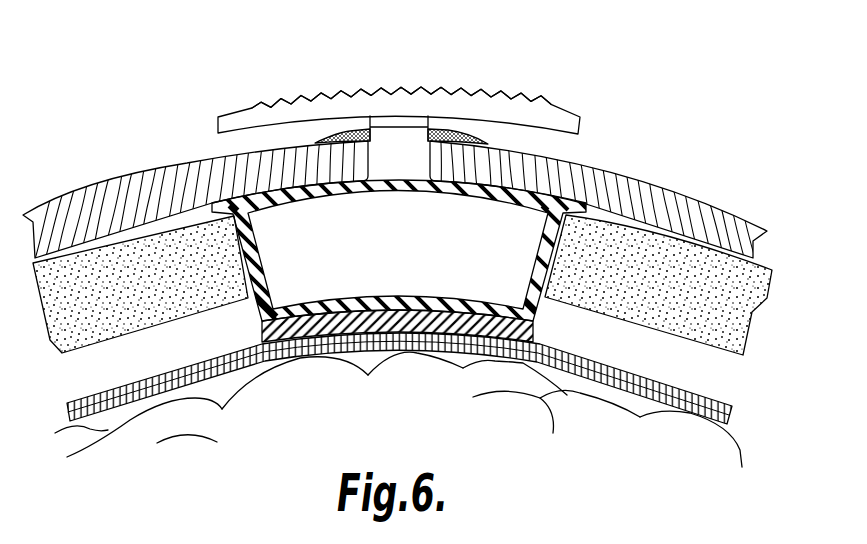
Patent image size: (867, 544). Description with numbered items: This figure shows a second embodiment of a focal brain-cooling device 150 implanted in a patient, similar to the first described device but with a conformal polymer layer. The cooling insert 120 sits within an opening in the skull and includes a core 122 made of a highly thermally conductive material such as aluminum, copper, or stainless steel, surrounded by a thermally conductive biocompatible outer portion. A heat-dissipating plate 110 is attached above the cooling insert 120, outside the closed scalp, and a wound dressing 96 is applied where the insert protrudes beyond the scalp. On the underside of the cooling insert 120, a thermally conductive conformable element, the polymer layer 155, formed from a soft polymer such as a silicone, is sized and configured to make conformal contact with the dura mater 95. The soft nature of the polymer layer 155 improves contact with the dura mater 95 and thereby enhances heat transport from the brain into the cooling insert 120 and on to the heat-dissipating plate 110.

The brain-cooling device 150 is at (503, 93).
The heat-dissipating plate 110 is at (593, 116).
The wound dressing 96 is at (450, 130).
The cooling insert 120 is at (254, 310).
The core 122 is at (412, 253).
The polymer layer 155 is at (535, 325).
The dura mater 95 is at (722, 400).